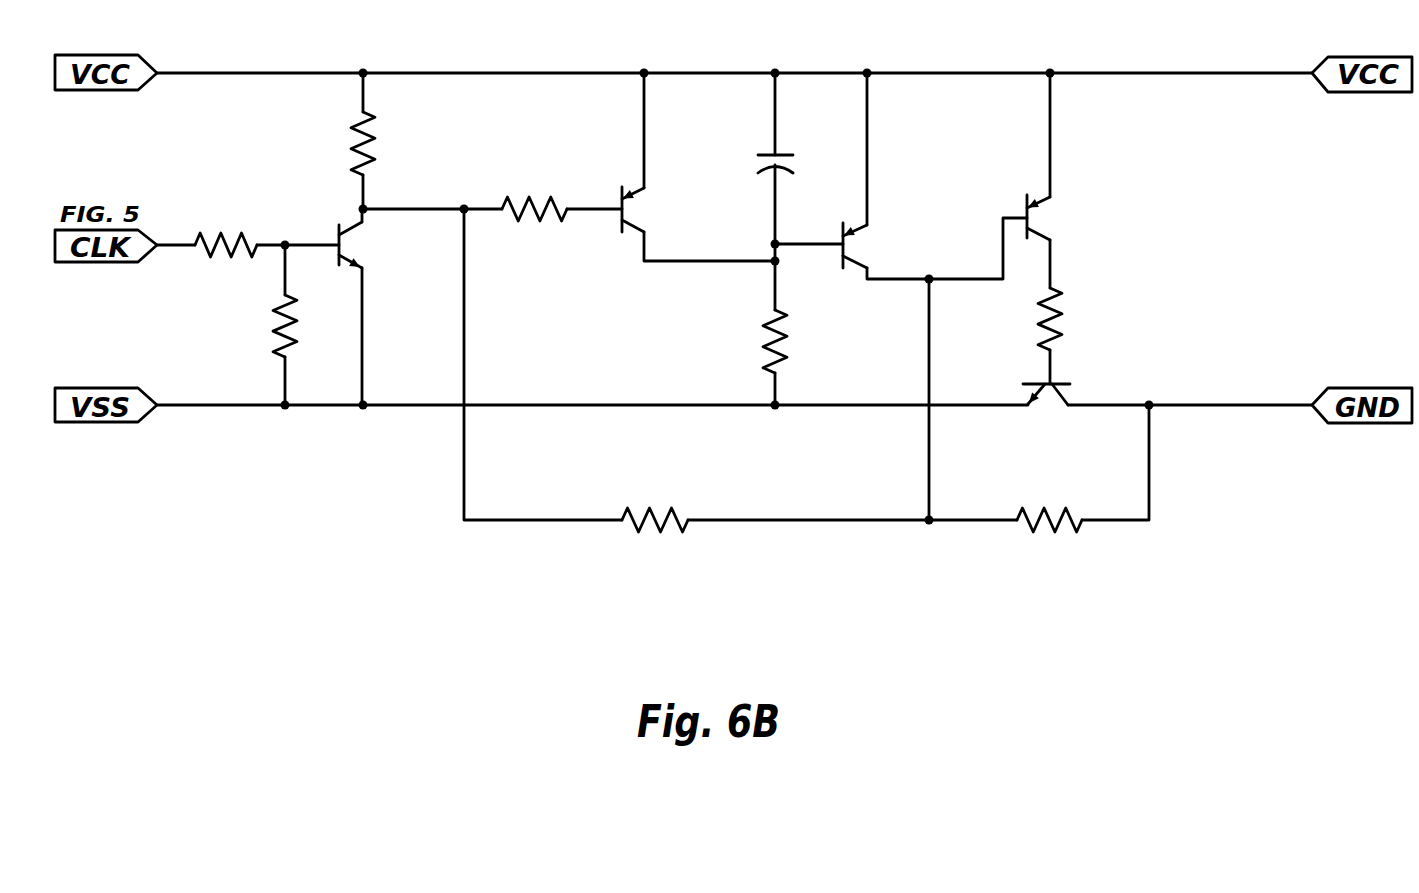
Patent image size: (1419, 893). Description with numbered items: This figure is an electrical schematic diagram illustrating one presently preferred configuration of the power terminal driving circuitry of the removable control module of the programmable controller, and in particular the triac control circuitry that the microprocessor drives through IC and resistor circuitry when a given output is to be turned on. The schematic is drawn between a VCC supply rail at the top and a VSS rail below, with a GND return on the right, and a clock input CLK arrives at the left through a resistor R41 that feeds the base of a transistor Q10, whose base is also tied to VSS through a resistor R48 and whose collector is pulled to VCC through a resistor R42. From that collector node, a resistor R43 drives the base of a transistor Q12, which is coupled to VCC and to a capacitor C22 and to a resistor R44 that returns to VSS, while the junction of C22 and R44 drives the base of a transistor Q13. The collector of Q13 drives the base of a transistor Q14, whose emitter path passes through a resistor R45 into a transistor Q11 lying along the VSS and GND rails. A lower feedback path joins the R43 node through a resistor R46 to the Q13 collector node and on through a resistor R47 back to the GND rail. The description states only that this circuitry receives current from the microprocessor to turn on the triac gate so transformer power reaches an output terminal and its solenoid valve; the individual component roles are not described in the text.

The resistor R41 is at (226, 232).
The resistor R42 is at (392, 143).
The resistor R43 is at (534, 195).
The resistor R44 is at (805, 341).
The resistor R45 is at (1083, 319).
The resistor R46 is at (655, 505).
The resistor R47 is at (1049, 505).
The resistor R48 is at (255, 326).
The capacitor C22 is at (804, 169).
The transistor Q10 is at (380, 245).
The transistor Q11 is at (1046, 412).
The transistor Q12 is at (663, 209).
The transistor Q13 is at (885, 245).
The transistor Q14 is at (1068, 217).